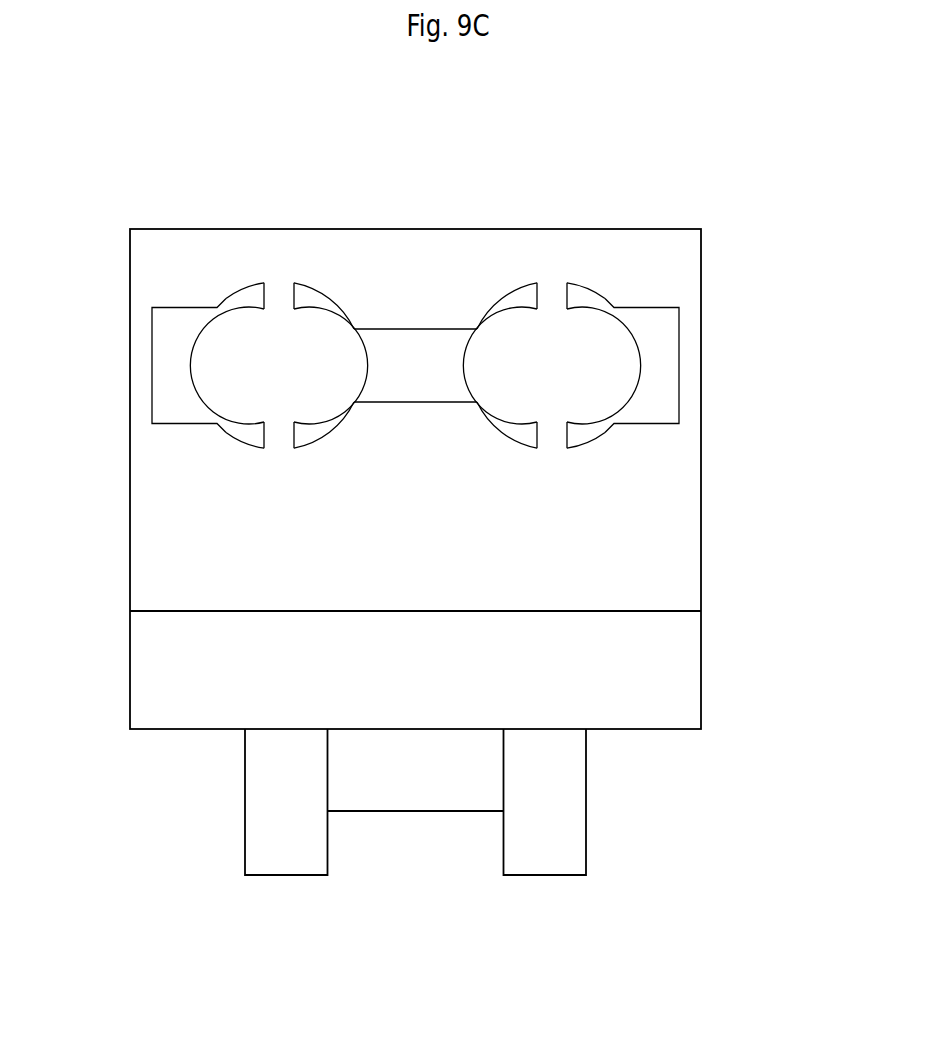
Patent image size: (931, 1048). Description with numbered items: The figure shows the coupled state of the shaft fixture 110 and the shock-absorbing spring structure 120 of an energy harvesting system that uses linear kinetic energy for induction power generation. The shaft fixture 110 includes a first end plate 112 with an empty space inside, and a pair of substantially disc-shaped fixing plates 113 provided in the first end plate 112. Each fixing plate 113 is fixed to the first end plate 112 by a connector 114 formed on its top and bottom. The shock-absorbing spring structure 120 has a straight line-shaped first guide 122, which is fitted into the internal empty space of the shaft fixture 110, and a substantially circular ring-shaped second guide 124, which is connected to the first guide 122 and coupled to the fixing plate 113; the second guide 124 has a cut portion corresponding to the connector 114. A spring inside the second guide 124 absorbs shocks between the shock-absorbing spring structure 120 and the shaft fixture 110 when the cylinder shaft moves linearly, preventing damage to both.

The shaft fixture 110 is at (725, 243).
The first end plate 112 is at (687, 529).
The fixing plate 113 is at (273, 377).
The connector 114 is at (278, 439).
The shock-absorbing spring structure 120 is at (419, 323).
The first guide 122 is at (185, 358).
The second guide 124 is at (323, 307).